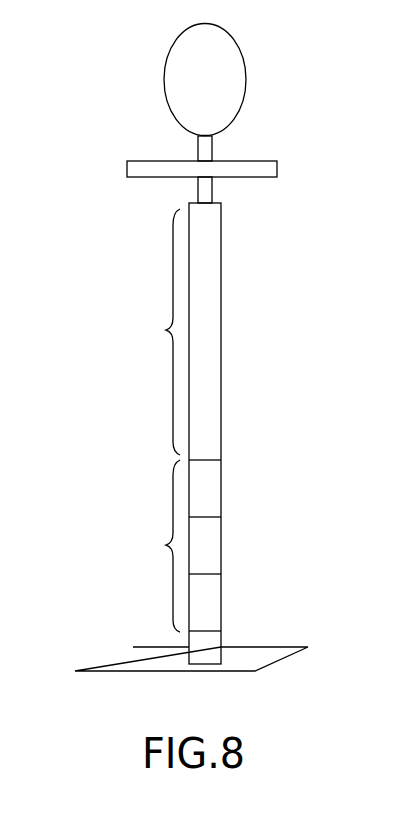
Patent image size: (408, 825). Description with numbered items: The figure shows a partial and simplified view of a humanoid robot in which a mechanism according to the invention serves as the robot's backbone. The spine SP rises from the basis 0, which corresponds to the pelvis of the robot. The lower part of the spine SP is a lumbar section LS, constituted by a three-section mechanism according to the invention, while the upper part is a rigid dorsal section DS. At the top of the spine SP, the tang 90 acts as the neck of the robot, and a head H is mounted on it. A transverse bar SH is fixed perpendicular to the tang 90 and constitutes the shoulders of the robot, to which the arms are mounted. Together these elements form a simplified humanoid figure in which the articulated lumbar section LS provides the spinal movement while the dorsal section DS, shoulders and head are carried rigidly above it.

The head H is at (247, 77).
The tang 90 is at (212, 152).
The transverse bar SH is at (127, 168).
The spine SP is at (230, 352).
The dorsal section DS is at (156, 329).
The lumbar section LS is at (156, 545).
The basis 0 is at (260, 647).